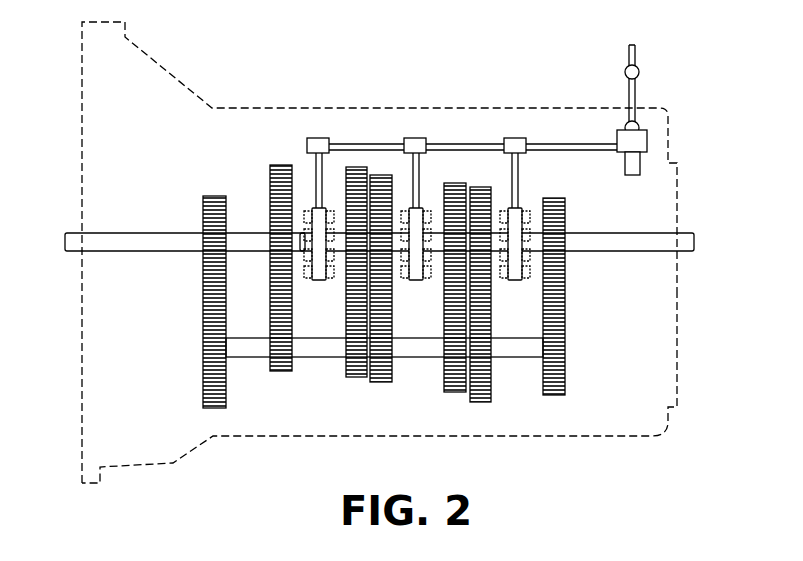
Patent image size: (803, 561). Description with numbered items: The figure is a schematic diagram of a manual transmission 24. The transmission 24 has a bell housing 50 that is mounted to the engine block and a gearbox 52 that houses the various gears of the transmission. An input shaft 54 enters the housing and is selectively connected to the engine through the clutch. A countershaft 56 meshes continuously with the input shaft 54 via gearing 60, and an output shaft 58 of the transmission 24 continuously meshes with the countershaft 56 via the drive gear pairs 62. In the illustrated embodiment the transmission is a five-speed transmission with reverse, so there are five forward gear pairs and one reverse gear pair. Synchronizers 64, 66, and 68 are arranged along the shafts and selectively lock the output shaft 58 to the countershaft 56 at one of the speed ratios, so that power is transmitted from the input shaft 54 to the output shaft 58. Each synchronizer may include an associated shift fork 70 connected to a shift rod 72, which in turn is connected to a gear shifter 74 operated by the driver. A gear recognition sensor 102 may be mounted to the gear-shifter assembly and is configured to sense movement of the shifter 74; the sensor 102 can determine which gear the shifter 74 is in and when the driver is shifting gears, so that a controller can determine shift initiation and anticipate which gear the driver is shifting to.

The transmission 24 is at (410, 108).
The bell housing 50 is at (155, 56).
The gearbox 52 is at (585, 436).
The input shaft 54 is at (72, 232).
The countershaft 56 is at (252, 358).
The output shaft 58 is at (688, 232).
The gearing 60 is at (197, 297).
The drive gear pairs 62 is at (262, 256).
The synchronizer 64 is at (316, 208).
The synchronizer 66 is at (414, 208).
The synchronizer 68 is at (521, 210).
The shift fork 70 is at (419, 177).
The shift rod 72 is at (576, 143).
The gear shifter 74 is at (637, 55).
The gear recognition sensor 102 is at (647, 162).